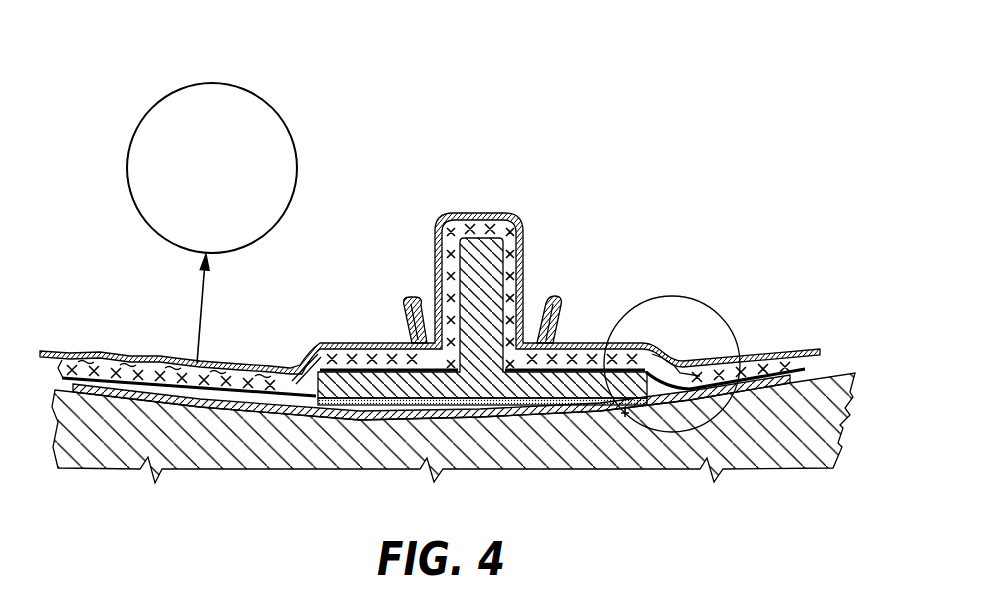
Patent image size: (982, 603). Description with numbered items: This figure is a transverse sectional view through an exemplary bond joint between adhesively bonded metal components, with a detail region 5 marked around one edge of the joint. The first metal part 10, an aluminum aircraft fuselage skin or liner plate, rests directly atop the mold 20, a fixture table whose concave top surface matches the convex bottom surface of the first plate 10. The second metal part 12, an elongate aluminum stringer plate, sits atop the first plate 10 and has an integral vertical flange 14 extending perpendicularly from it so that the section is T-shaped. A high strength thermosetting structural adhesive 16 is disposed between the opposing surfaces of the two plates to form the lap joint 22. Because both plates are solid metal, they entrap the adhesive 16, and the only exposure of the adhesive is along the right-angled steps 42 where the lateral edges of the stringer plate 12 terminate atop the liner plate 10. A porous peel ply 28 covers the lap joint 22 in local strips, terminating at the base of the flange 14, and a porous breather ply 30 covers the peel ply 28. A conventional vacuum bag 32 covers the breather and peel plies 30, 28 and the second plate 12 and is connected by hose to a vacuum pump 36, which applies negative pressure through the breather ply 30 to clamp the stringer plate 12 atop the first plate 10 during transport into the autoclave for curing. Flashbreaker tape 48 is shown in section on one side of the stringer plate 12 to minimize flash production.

The detail region 5 is at (678, 293).
The first metal part 10 is at (225, 407).
The second metal part 12 is at (470, 388).
The vertical flange 14 is at (468, 219).
The structural adhesive 16 is at (522, 403).
The mold 20 is at (734, 446).
The lap joint 22 is at (626, 414).
The porous peel ply 28 is at (400, 352).
The porous breather ply 30 is at (447, 261).
The vacuum bag 32 is at (486, 214).
The vacuum pump 36 is at (250, 93).
The right-angled step 42 is at (289, 370).
The flashbreaker tape 48 is at (237, 397).